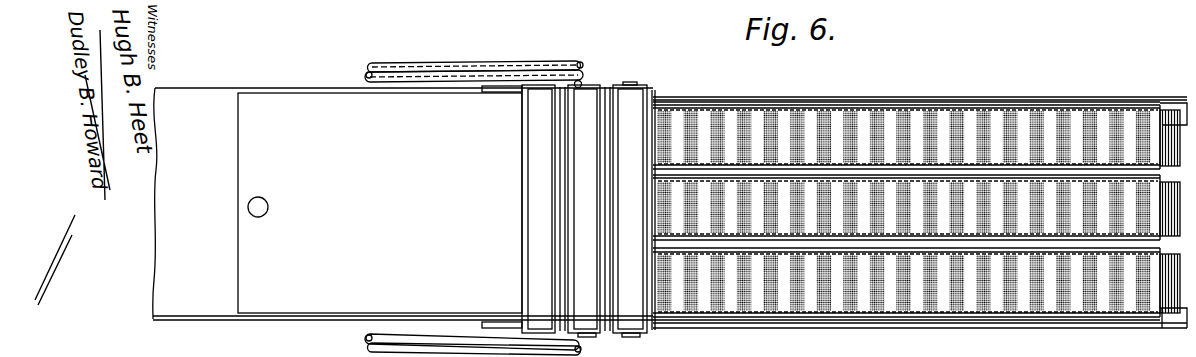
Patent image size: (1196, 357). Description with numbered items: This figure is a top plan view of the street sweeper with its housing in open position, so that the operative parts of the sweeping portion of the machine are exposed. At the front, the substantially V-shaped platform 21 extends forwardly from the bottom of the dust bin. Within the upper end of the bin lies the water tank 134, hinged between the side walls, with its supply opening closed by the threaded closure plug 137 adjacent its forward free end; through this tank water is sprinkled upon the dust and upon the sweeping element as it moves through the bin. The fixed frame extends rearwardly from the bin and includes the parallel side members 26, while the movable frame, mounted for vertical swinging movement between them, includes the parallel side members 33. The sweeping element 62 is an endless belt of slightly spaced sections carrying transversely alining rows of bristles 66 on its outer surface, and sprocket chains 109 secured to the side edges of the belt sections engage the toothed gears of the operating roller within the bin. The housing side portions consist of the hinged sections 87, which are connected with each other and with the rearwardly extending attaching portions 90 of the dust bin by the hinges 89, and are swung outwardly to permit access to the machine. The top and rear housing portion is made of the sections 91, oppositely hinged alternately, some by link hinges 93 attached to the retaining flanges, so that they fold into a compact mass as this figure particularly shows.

The V-shaped platform 21 is at (154, 268).
The side members of the fixed frame 26 is at (763, 97).
The side members of the movable frame 33 is at (856, 101).
The sweeping element 62 is at (965, 117).
The rows of bristles 66 is at (1138, 118).
The hinged sections 87 is at (498, 62).
The hinges 89 is at (366, 73).
The attaching portions 90 is at (500, 91).
The sections of the housing portion 91 is at (524, 218).
The link hinges 93 is at (588, 337).
The sprocket chains 109 is at (1040, 110).
The water tank 134 is at (380, 203).
The threaded closure plug 137 is at (268, 208).